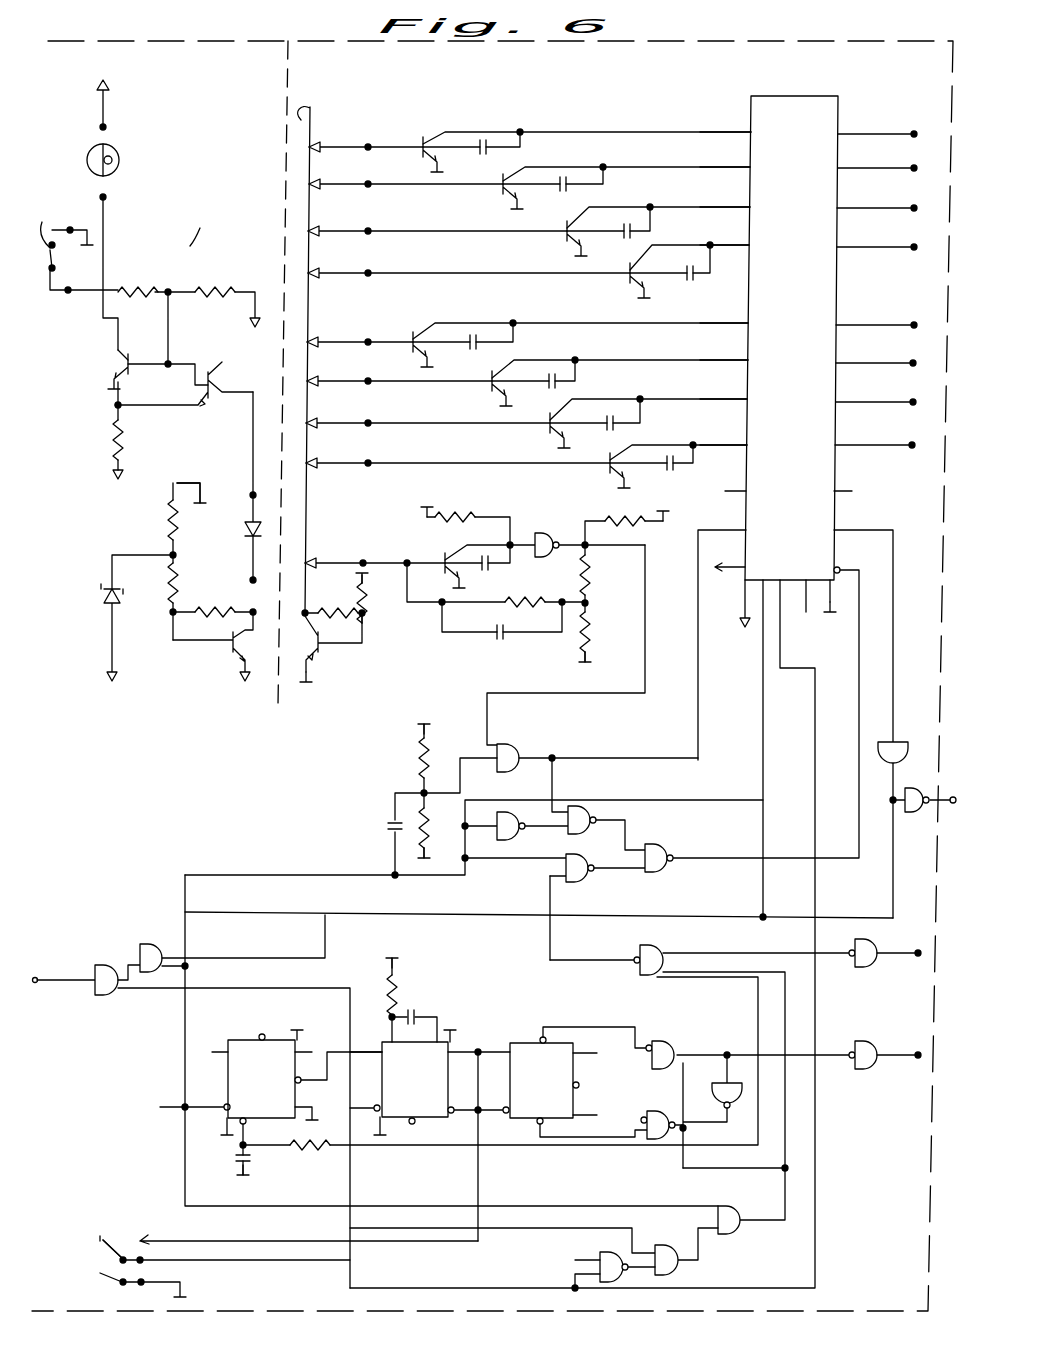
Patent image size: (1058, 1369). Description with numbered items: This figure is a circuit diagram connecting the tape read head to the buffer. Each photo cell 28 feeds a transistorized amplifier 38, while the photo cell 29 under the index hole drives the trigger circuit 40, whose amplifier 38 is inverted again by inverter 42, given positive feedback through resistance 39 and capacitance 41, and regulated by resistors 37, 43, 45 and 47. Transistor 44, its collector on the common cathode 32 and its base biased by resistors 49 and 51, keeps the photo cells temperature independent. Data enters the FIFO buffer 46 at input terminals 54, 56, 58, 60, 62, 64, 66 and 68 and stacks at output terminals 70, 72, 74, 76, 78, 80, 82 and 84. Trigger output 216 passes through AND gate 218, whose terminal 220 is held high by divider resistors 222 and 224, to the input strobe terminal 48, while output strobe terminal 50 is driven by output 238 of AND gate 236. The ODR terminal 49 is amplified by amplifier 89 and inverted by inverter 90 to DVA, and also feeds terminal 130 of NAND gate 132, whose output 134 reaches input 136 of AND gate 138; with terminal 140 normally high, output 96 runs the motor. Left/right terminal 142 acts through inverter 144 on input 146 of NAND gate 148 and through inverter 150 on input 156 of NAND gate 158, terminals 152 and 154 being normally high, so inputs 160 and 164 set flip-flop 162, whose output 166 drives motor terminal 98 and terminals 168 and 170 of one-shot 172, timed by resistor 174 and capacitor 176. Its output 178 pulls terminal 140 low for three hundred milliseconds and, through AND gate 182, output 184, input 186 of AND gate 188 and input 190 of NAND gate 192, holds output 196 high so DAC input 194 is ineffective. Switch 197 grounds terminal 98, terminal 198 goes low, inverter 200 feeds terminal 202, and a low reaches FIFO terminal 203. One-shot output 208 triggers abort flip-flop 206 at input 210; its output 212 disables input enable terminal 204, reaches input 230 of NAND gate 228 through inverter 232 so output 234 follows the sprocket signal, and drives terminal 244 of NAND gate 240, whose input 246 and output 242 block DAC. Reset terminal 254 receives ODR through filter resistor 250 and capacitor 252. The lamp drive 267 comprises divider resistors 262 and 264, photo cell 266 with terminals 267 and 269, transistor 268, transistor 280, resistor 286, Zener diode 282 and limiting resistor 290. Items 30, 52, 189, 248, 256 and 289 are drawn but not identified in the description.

The photo cell 28 is at (320, 140).
The photo cell 29 is at (316, 553).
The lamp 30 is at (120, 160).
The cathode 32 is at (314, 338).
The 22K resistor 37 is at (470, 514).
The transistorized amplifier 38 is at (463, 130).
The 82K resistance 39 is at (527, 600).
The trigger circuit 40 is at (378, 548).
The 0.00068 uf capacitance 41 is at (612, 518).
The inverter 42 is at (545, 532).
The 1.8K resistor 43 is at (592, 578).
The transistor 44 is at (318, 668).
The 1K resistor 45 is at (592, 636).
The FIFO buffer 46 is at (814, 96).
The 1K resistor 47 is at (502, 640).
The input strobe terminal 48 is at (743, 530).
The output data ready (ODR) terminal 49 is at (338, 610).
The output strobe terminal 50 is at (846, 572).
The 1.8K resistor 51 is at (375, 612).
The FIFO input 52 is at (743, 489).
The input terminal 54 is at (743, 444).
The input terminal 56 is at (743, 399).
The input terminal 58 is at (744, 360).
The input terminal 60 is at (744, 323).
The input terminal 62 is at (745, 245).
The input terminal 64 is at (746, 207).
The input terminal 66 is at (746, 167).
The input terminal 68 is at (746, 132).
The output terminal 70 is at (848, 131).
The output terminal 72 is at (848, 165).
The output terminal 74 is at (848, 205).
The output terminal 76 is at (848, 244).
The output terminal 78 is at (848, 322).
The output terminal 80 is at (846, 360).
The output terminal 82 is at (846, 399).
The output terminal 84 is at (846, 442).
The amplifier 89 is at (899, 742).
The inverter 90 is at (909, 790).
The output terminal 96 is at (37, 985).
The motor control circuit terminal 98 is at (143, 1238).
The terminal 130 is at (185, 957).
The NAND gate 132 is at (150, 942).
The output terminal 134 is at (138, 945).
The input terminal 136 is at (122, 965).
The AND gate 138 is at (92, 968).
The terminal 140 is at (142, 990).
The left/right terminal 142 is at (912, 1053).
The inverter 144 is at (860, 1044).
The input terminal 146 is at (692, 1045).
The NAND gate 148 is at (660, 1042).
The inverter 150 is at (738, 1108).
The terminal 152 is at (665, 1150).
The terminal 154 is at (725, 1053).
The input terminal 156 is at (662, 1112).
The NAND gate 158 is at (644, 1118).
The input terminal 160 is at (532, 1127).
The flip-flop 162 is at (550, 1080).
The input terminal 164 is at (548, 1035).
The output terminal 166 is at (503, 1045).
The terminal 168 is at (455, 1045).
The terminal 170 is at (453, 1117).
The one-shot time delay 172 is at (430, 1082).
The 47K resistor 174 is at (398, 985).
The 20 uf capacitor 176 is at (414, 1010).
The output terminal 178 is at (348, 1112).
The AND gate 182 is at (664, 1275).
The output terminal 184 is at (660, 1250).
The input terminal 186 is at (645, 1285).
The AND gate 188 is at (738, 1232).
The gate 189 is at (715, 1210).
The input terminal 190 is at (665, 974).
The NAND gate 192 is at (632, 957).
The input terminal 194 is at (662, 950).
The output terminal 196 is at (612, 966).
The control switch 197 is at (93, 1283).
The terminal 198 is at (90, 1240).
The inverter 200 is at (573, 1264).
The terminal 202 is at (600, 1258).
The terminal 203 is at (785, 580).
The input enable terminal 204 is at (758, 578).
The abort flip-flop 206 is at (265, 1082).
The output terminal 208 is at (358, 1015).
The input terminal 210 is at (305, 1070).
The output terminal 212 is at (172, 1106).
The output terminal 216 is at (495, 745).
The AND gate 218 is at (525, 755).
The terminal 220 is at (468, 758).
The 2K resistor 222 is at (412, 756).
The 3K resistor 224 is at (415, 812).
The NAND gate 228 is at (600, 808).
The input 230 is at (535, 866).
The inverter 232 is at (516, 806).
The output terminal 234 is at (600, 815).
The AND gate 236 is at (672, 868).
The output terminal 238 is at (678, 852).
The NAND gate 240 is at (595, 880).
The output terminal 242 is at (640, 880).
The terminal 244 is at (539, 901).
The terminal 246 is at (548, 898).
The line 248 is at (710, 876).
The 300 ohm resistor 250 is at (500, 1075).
The 0.01 microfarad capacitor 252 is at (237, 1162).
The reset terminal 254 is at (246, 1128).
The capacitor 256 is at (388, 830).
The 10K resistor 262 is at (140, 288).
The resistor 264 is at (218, 288).
The photo cell 266 is at (118, 366).
The lamp drive 267 is at (250, 495).
The NPN transistor 268 is at (238, 374).
The terminal 269 is at (245, 530).
The NPN transistor 280 is at (225, 655).
The Zener diode 282 is at (102, 598).
The 56 ohm resistor 286 is at (228, 610).
The resistor 289 is at (245, 580).
The 680 ohm resistor 290 is at (166, 526).